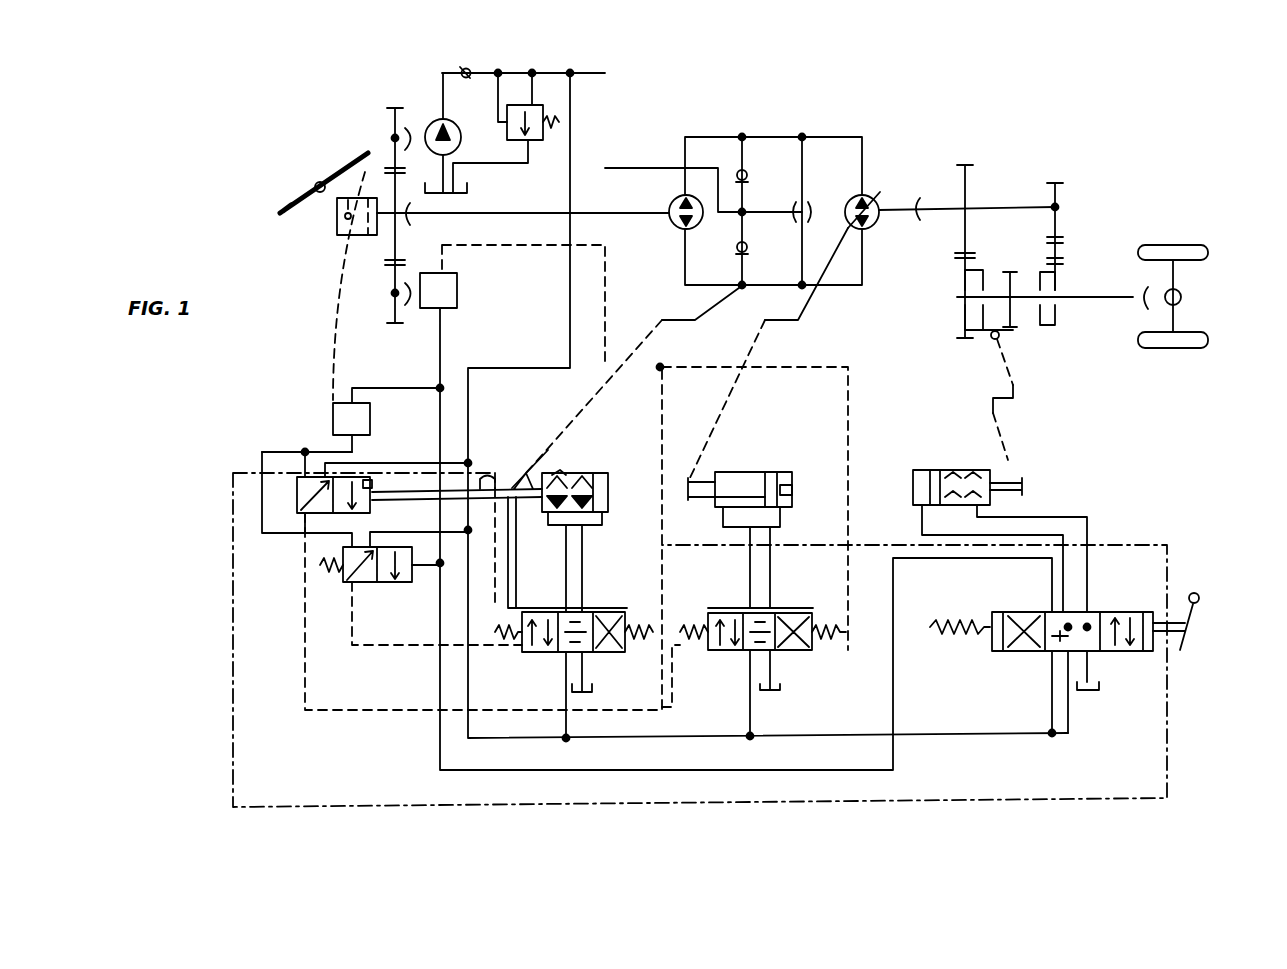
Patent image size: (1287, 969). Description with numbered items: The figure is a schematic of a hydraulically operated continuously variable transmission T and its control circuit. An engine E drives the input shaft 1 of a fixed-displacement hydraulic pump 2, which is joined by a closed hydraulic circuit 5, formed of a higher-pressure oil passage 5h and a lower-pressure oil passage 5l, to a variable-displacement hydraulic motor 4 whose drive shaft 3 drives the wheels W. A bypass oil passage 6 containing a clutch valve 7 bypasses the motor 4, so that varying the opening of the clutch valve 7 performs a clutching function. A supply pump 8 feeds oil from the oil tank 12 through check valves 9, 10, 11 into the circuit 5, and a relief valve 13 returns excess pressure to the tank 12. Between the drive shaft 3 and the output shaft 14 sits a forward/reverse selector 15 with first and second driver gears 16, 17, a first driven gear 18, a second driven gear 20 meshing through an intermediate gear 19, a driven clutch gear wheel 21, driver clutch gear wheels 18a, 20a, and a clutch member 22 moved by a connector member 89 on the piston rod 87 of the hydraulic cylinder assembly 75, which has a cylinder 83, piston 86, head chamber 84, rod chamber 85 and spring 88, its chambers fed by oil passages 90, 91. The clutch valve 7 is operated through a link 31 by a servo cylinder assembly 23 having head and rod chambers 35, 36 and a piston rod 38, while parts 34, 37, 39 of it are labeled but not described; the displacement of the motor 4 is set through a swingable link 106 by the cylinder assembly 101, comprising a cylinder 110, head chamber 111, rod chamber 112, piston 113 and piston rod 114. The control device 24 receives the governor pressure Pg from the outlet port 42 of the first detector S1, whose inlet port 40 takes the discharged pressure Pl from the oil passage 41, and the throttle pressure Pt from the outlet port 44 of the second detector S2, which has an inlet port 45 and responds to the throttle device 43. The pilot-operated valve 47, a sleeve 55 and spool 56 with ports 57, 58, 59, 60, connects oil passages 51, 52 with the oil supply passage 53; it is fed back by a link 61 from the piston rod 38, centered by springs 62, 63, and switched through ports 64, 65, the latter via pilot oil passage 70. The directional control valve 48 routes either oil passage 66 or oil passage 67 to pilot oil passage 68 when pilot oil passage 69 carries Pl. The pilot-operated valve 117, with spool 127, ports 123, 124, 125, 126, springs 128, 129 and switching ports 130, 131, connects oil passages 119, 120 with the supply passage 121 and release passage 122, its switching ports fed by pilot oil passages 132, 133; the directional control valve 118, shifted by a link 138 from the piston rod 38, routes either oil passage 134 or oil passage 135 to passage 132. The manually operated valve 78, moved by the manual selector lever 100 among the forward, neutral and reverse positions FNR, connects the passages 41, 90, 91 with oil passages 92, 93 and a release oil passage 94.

The input shaft 1 is at (528, 213).
The hydraulic pump 2 is at (670, 200).
The drive shaft 3 is at (948, 208).
The hydraulic motor 4 is at (852, 198).
The closed hydraulic circuit 5 is at (870, 142).
The lower-pressure oil passage 5l is at (708, 137).
The higher-pressure oil passage 5h is at (712, 285).
The bypass oil passage 6 is at (802, 165).
The clutch valve 7 is at (795, 208).
The supply pump 8 is at (450, 120).
The check valve 9 is at (466, 68).
The check valve 10 is at (737, 247).
The check valve 11 is at (748, 176).
The oil tank 12 is at (777, 445).
The relief valve 13 is at (505, 135).
The output shaft 14 is at (1118, 297).
The forward/reverse selector 15 is at (1035, 153).
The first driver gear 16 is at (968, 178).
The second driver gear 17 is at (1058, 185).
The first driven gear 18 is at (965, 280).
The driver clutch gear wheel 18a is at (950, 255).
The intermediate gear 19 is at (1065, 262).
The second driven gear 20 is at (1055, 318).
The driver clutch gear wheel 20a is at (1037, 249).
The driven clutch gear wheel 21 is at (1003, 268).
The clutch member 22 is at (1010, 335).
The servo cylinder assembly 23 is at (615, 450).
The control device 24 is at (745, 812).
The link 31 is at (655, 328).
The valve body 34 is at (608, 508).
The head chamber 35 is at (608, 487).
The rod chamber 36 is at (572, 470).
The check valve 37 is at (595, 470).
The piston rod 38 is at (524, 470).
The lever pin 39 is at (565, 475).
The inlet port 40 is at (440, 312).
The oil passage 41 is at (975, 562).
The outlet port 42 is at (450, 278).
The device for opening and closing the throttle valve 43 is at (345, 170).
The outlet port 44 is at (355, 448).
The inlet port 45 is at (340, 403).
The pilot-operated valve 47 is at (618, 600).
The directional control valve 48 is at (350, 585).
The oil passage 51 is at (582, 535).
The oil passage 52 is at (562, 535).
The oil supply passage 53 is at (538, 368).
The sleeve 55 is at (530, 655).
The spool 56 is at (628, 608).
The port 57 is at (592, 612).
The port 58 is at (556, 608).
The port 59 is at (566, 658).
The port 60 is at (584, 658).
The link 61 is at (510, 573).
The spring 62 is at (495, 633).
The spring 63 is at (650, 625).
The switching port 64 is at (520, 655).
The switching port 65 is at (632, 648).
The oil passage 66 is at (430, 535).
The oil passage 67 is at (258, 455).
The pilot oil passage 68 is at (395, 645).
The pilot oil passage 69 is at (425, 580).
The pilot oil passage 70 is at (545, 243).
The hydraulic cylinder assembly 75 is at (908, 454).
The manually operated valve 78 is at (1105, 605).
The cylinder 83 is at (1002, 462).
The head chamber 84 is at (913, 478).
The rod chamber 85 is at (968, 470).
The piston 86 is at (928, 470).
The piston rod 87 is at (1010, 500).
The spring 88 is at (950, 470).
The connector member 89 is at (1018, 392).
The oil passage 90 is at (920, 530).
The oil passage 91 is at (977, 518).
The oil passage 92 is at (1050, 660).
The oil passage 93 is at (1070, 716).
The release oil passage 94 is at (1090, 662).
The manual selector lever 100 is at (1200, 596).
The hydraulic cylinder assembly 101 is at (787, 430).
The swingable link 106 is at (770, 327).
The cylinder 110 is at (790, 475).
The head chamber 111 is at (793, 490).
The rod chamber 112 is at (737, 472).
The piston 113 is at (782, 512).
The piston rod 114 is at (712, 500).
The pilot-operated valve 117 is at (828, 680).
The directional control valve 118 is at (300, 515).
The oil passage 119 is at (775, 560).
The oil passage 120 is at (748, 560).
The oil supply passage 121 is at (750, 703).
The release oil passage 122 is at (782, 688).
The port 123 is at (776, 610).
The port 124 is at (728, 610).
The port 125 is at (750, 665).
The port 126 is at (770, 665).
The spool 127 is at (812, 612).
The spring 128 is at (690, 622).
The spring 129 is at (852, 632).
The switching port 130 is at (685, 676).
The switching port 131 is at (815, 652).
The pilot oil passage 132 is at (305, 655).
The pilot oil passage 133 is at (848, 395).
The oil passage 134 is at (408, 460).
The oil passage 135 is at (300, 450).
The link 138 is at (490, 472).
The engine E is at (340, 236).
The transmission T is at (812, 109).
The wheels W is at (1189, 237).
The discharged hydraulic pressure Pl is at (552, 73).
The hydraulic governor pressure Pg is at (605, 275).
The hydraulic throttle pressure Pt is at (310, 452).
The first detector S1 is at (458, 290).
The second detector S2 is at (385, 410).
The forward, neutral and reverse positions FNR is at (960, 653).